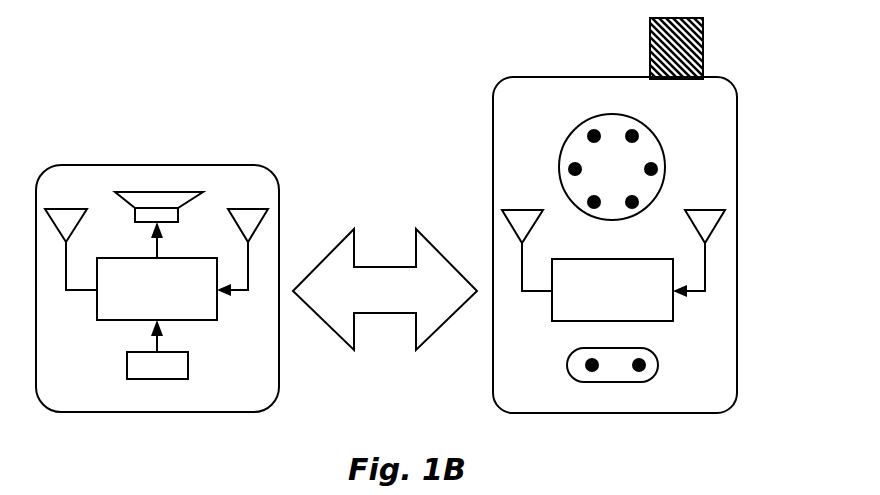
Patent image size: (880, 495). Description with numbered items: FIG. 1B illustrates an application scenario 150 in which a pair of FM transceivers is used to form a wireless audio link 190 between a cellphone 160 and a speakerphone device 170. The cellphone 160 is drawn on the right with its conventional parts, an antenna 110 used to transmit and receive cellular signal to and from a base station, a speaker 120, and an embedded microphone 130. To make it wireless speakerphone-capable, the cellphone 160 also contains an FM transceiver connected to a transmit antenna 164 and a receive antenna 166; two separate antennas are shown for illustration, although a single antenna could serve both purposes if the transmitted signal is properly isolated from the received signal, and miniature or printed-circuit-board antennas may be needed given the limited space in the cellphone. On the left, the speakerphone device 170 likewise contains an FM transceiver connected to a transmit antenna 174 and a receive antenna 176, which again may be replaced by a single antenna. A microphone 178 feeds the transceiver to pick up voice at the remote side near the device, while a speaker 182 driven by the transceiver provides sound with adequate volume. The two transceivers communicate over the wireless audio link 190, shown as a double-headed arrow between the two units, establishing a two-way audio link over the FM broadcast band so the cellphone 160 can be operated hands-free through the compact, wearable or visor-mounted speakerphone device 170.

The antenna 110 is at (703, 48).
The speaker 120 is at (650, 129).
The embedded microphone 130 is at (658, 365).
The wireless communication system 150 is at (355, 117).
The cellphone 160 is at (737, 245).
The transmit antenna 164 is at (534, 224).
The receive antenna 166 is at (693, 224).
The speakerphone device 170 is at (279, 235).
The transmit antenna 174 is at (77, 224).
The receive antenna 176 is at (237, 224).
The microphone 178 is at (145, 380).
The speaker 182 is at (115, 192).
The wireless audio link 190 is at (385, 347).